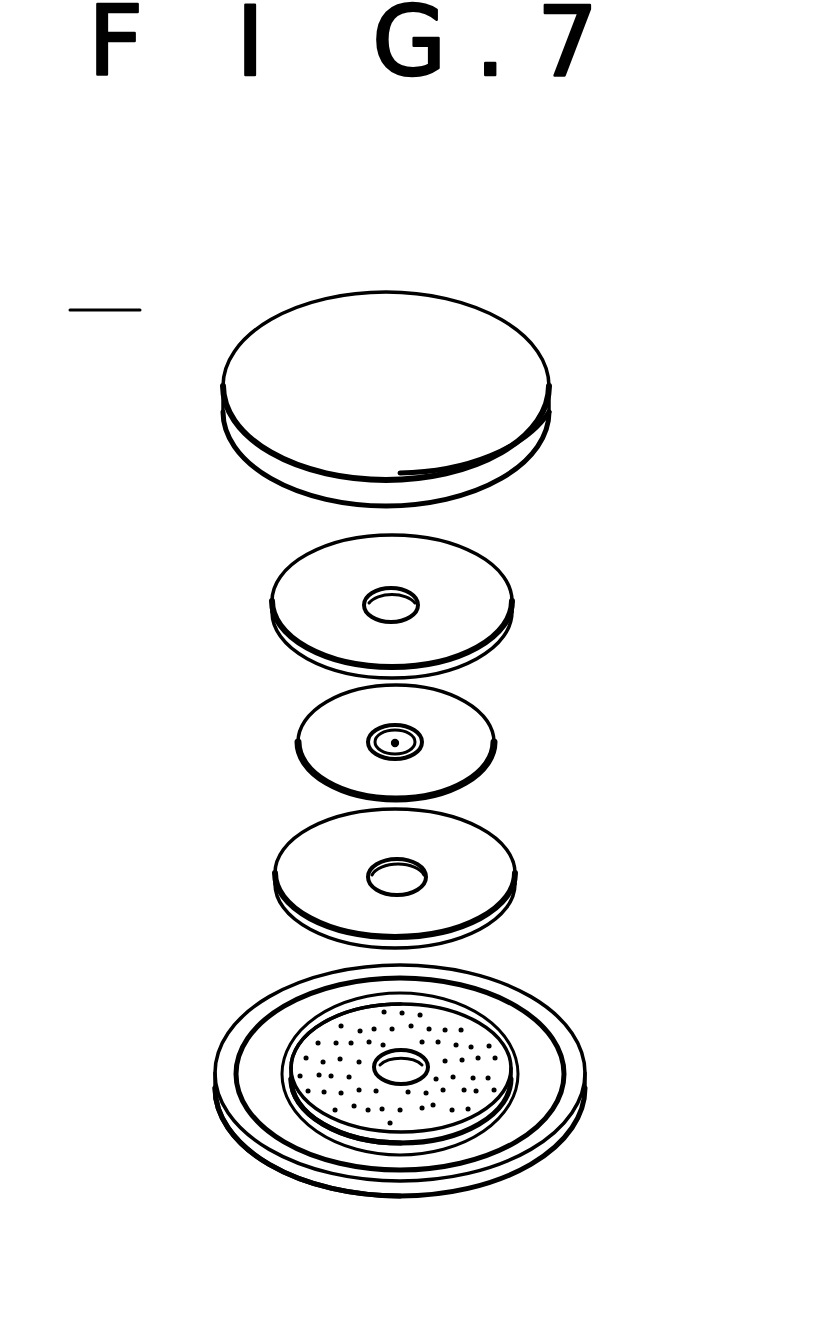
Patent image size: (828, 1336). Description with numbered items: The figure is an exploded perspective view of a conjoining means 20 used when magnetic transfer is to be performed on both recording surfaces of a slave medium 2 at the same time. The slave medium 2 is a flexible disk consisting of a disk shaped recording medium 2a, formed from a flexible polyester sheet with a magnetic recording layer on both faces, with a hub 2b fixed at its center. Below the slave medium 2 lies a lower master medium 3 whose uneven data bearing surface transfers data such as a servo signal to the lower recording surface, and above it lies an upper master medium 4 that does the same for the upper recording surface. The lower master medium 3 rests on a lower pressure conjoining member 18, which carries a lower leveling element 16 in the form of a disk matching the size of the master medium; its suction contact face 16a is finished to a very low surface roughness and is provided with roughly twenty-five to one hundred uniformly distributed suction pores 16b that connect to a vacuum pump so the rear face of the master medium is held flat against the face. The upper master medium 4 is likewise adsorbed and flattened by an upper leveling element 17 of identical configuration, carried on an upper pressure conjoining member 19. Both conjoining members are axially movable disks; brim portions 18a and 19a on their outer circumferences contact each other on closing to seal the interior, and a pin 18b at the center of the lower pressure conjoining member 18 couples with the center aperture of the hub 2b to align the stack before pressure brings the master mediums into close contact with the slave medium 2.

The conjoining means 20 is at (105, 281).
The upper pressure conjoining member 19 is at (495, 342).
The brim portion 19a is at (252, 468).
The upper leveling element 17 is at (522, 458).
The upper master medium 4 is at (493, 592).
The slave medium 2 is at (475, 735).
The recording medium 2a is at (322, 733).
The hub 2b is at (395, 743).
The lower master medium 3 is at (495, 870).
The lower leveling element 16 is at (507, 1030).
The suction contact face 16a is at (297, 1033).
The suction pores 16b is at (317, 1068).
The lower pressure conjoining member 18 is at (585, 1097).
The brim portion 18a is at (268, 1128).
The pin 18b is at (403, 1068).